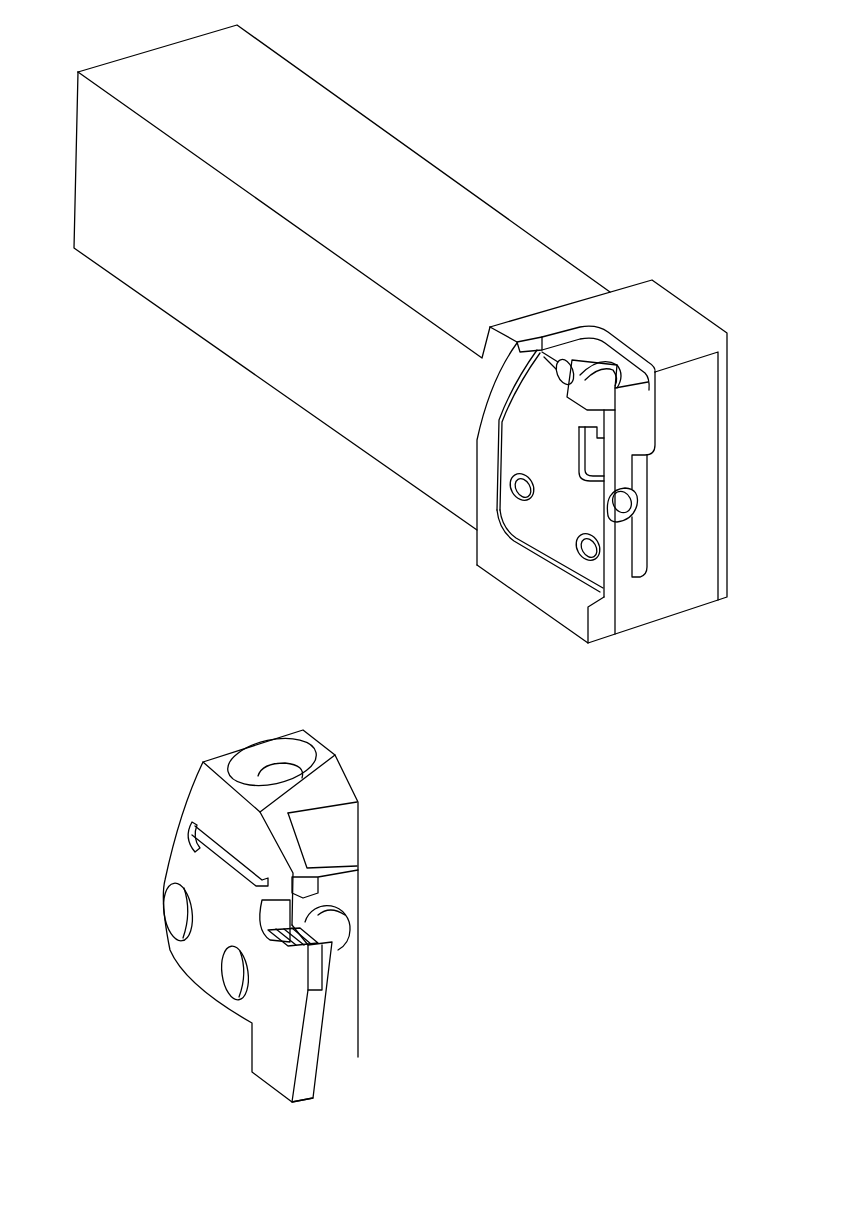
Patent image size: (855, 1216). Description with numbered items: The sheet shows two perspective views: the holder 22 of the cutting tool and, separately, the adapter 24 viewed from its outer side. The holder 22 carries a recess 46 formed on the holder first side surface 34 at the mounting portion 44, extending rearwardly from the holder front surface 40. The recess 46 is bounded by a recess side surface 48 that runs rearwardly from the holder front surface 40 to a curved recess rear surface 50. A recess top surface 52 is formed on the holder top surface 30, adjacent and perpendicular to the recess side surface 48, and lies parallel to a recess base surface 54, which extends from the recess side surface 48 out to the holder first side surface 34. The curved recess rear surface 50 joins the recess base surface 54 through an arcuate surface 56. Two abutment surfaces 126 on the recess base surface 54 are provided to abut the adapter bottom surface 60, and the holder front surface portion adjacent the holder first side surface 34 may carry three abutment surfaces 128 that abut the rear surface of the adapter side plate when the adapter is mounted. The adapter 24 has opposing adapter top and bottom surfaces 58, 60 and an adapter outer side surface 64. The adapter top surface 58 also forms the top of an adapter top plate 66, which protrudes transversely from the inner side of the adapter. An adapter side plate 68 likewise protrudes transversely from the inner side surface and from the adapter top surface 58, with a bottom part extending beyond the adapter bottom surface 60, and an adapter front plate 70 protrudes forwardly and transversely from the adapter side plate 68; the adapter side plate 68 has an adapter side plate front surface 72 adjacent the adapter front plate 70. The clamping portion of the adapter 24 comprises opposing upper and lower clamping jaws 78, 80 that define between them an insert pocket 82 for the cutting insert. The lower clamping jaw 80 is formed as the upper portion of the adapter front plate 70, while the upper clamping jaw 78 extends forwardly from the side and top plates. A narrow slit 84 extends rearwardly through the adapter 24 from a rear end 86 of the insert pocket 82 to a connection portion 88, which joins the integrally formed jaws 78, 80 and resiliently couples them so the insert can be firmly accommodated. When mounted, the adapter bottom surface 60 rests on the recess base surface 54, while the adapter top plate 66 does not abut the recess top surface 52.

In FIG. 4, the holder 22 is at (437, 64).
In FIG. 5, the adapter 24 is at (158, 745).
In FIG. 4, the holder top surface 30 is at (663, 305).
In FIG. 4, the holder first side surface 34 is at (178, 282).
In FIG. 4, the holder front surface 40 is at (658, 527).
In FIG. 4, the mounting portion 44 is at (724, 302).
In FIG. 4, the recess 46 is at (531, 396).
In FIG. 4, the recess side surface 48 is at (542, 373).
In FIG. 4, the recess rear surface 50 is at (490, 453).
In FIG. 4, the recess top surface 52 is at (588, 353).
In FIG. 4, the recess base surface 54 is at (543, 583).
In FIG. 4, the arcuate surface 56 is at (487, 520).
In FIG. 5, the adapter top surface 58 is at (297, 735).
In FIG. 5, the adapter bottom surface 60 is at (220, 1005).
In FIG. 5, the adapter outer side surface 64 is at (195, 955).
In FIG. 5, the adapter top plate 66 is at (318, 855).
In FIG. 5, the adapter side plate 68 is at (375, 1041).
In FIG. 5, the adapter front plate 70 is at (326, 1090).
In FIG. 5, the adapter side plate front surface 72 is at (340, 1043).
In FIG. 5, the upper clamping jaw 78 is at (315, 866).
In FIG. 5, the lower clamping jaw 80 is at (314, 968).
In FIG. 5, the insert pocket 82 is at (323, 902).
In FIG. 5, the narrow slit 84 is at (180, 852).
In FIG. 5, the rear end 86 is at (260, 897).
In FIG. 5, the connection portion 88 is at (190, 830).
In FIG. 4, the abutment surfaces 126 is at (520, 545).
In FIG. 4, the abutment surfaces 128 is at (647, 607).